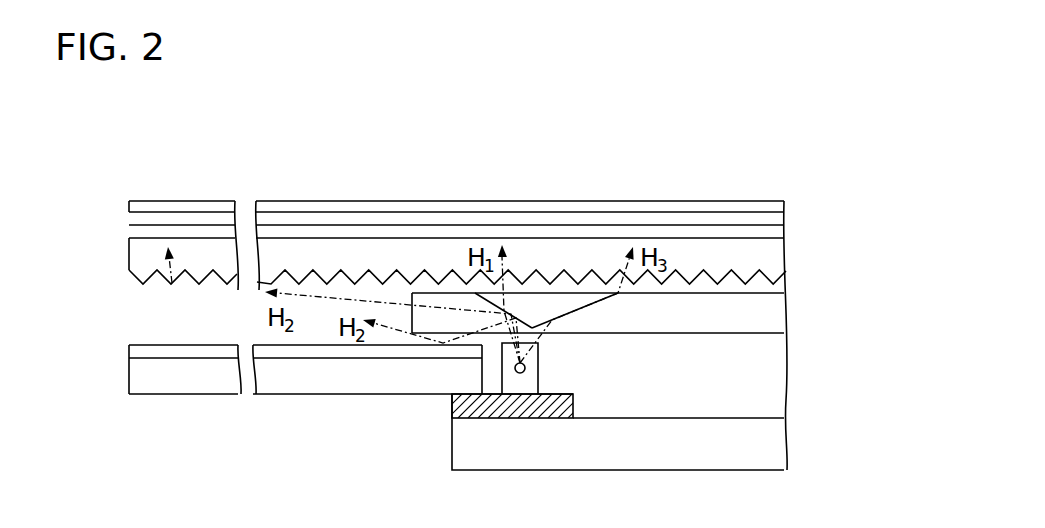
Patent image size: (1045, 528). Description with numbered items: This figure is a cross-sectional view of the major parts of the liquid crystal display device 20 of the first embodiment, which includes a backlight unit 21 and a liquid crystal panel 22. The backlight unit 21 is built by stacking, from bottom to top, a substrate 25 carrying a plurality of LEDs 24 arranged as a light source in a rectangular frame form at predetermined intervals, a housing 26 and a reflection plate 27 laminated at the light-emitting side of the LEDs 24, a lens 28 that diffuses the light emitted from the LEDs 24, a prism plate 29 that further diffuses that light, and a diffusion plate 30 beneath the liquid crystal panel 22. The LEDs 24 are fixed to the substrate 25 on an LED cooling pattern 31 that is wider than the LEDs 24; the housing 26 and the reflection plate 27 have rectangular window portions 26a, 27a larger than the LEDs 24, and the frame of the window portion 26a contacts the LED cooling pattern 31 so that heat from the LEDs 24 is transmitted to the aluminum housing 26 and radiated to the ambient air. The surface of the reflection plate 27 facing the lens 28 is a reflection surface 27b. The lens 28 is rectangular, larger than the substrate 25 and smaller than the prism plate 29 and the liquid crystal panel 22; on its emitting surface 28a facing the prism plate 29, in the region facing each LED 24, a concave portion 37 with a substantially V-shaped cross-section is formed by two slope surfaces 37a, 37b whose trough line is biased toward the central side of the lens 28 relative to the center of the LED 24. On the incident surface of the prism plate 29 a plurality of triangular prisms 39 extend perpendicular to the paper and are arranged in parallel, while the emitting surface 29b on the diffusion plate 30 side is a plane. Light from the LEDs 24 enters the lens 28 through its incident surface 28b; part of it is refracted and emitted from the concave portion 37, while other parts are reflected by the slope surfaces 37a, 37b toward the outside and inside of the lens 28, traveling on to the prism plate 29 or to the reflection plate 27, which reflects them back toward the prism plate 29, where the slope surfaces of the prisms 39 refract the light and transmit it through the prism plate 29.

The liquid crystal display device 20 is at (98, 179).
The backlight unit 21 is at (852, 238).
The liquid crystal panel 22 is at (748, 203).
The LED 24 is at (525, 367).
The substrate 25 is at (757, 443).
The housing 26 is at (322, 434).
The window portion of housing 26a is at (483, 379).
The reflection plate 27 is at (305, 404).
The window portion of reflection plate 27a is at (485, 350).
The reflection surface 27b is at (215, 344).
The lens 28 is at (634, 253).
The emitting surface of lens 28a is at (696, 293).
The incident surface of lens 28b is at (697, 334).
The prism plate 29 is at (493, 227).
The prism surface 29a is at (752, 287).
The emitting surface of prism plate 29b is at (197, 238).
The diffusion plate 30 is at (752, 226).
The LED cooling pattern 31 is at (458, 403).
The concave portion 37 is at (547, 220).
The slope surface 37a is at (513, 316).
The slope surface 37b is at (561, 316).
The prism 39 is at (172, 283).